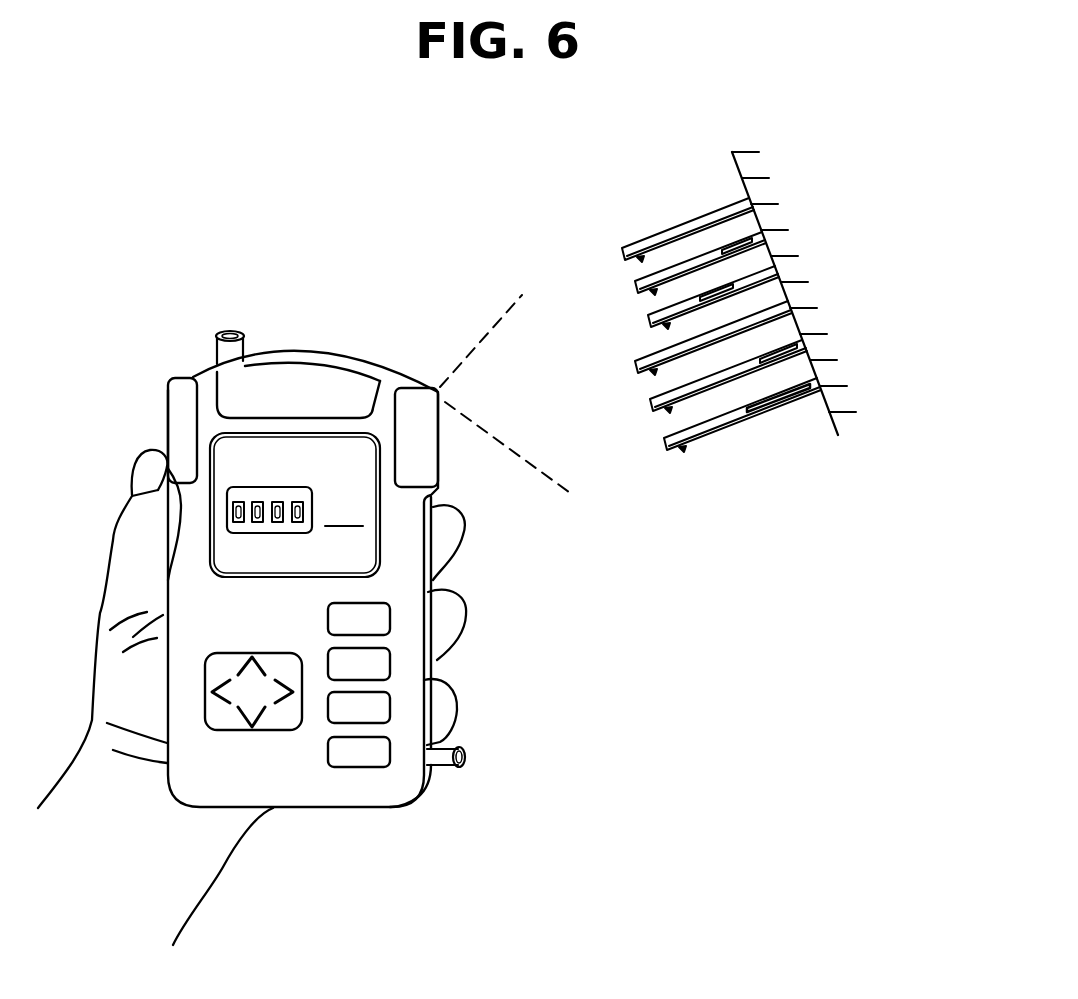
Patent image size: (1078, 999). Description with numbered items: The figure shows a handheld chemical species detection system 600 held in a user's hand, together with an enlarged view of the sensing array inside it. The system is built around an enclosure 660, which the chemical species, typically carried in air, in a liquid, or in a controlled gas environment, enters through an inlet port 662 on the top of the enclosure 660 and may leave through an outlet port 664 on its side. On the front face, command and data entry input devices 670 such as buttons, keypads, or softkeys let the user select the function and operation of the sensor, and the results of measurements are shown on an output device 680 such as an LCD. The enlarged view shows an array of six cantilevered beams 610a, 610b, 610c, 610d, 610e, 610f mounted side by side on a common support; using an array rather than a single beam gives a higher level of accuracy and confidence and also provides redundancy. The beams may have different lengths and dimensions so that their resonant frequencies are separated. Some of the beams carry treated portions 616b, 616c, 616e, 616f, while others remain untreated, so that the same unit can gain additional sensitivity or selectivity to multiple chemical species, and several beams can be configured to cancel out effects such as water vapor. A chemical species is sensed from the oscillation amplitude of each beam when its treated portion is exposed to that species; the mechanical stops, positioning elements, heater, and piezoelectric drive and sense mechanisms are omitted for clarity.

The handheld chemical species detection system 600 is at (137, 171).
The enclosure 660 is at (352, 360).
The inlet port 662 is at (233, 334).
The outlet port 664 is at (427, 744).
The command and data entry input devices 670 is at (268, 732).
The output device 680 is at (233, 488).
The cantilevered beam 610a is at (608, 268).
The cantilevered beam 610b is at (620, 300).
The cantilevered beam 610c is at (636, 332).
The cantilevered beam 610d is at (621, 382).
The cantilevered beam 610e is at (634, 419).
The cantilevered beam 610f is at (651, 460).
The treated portion 616b is at (757, 228).
The treated portion 616c is at (757, 268).
The treated portion 616e is at (793, 337).
The treated portion 616f is at (787, 384).